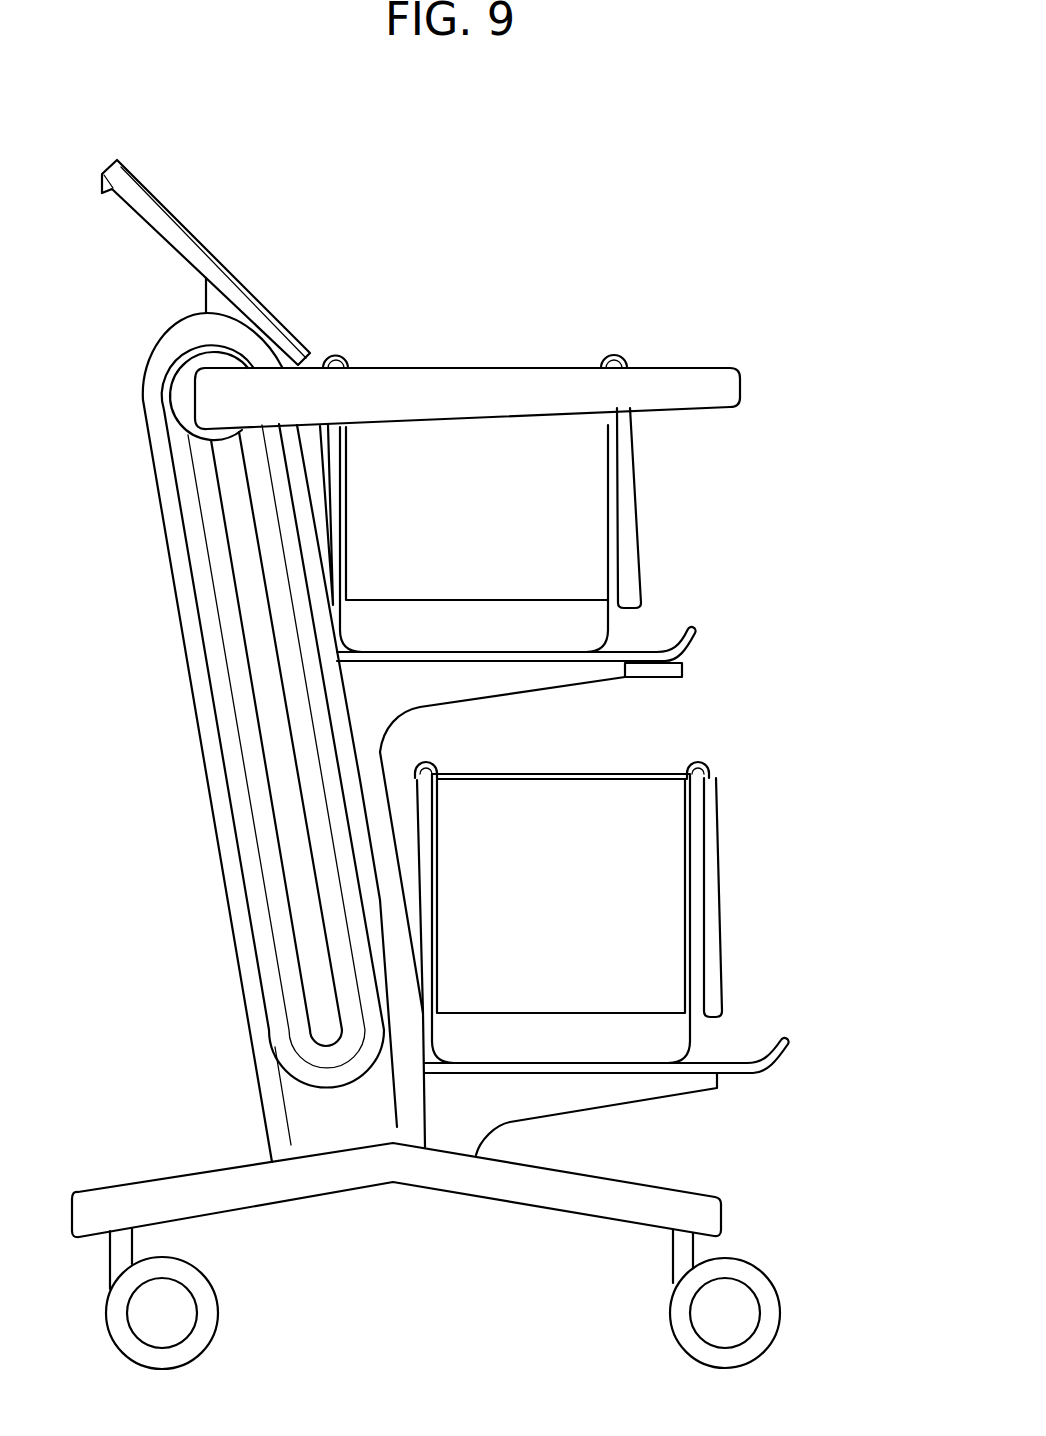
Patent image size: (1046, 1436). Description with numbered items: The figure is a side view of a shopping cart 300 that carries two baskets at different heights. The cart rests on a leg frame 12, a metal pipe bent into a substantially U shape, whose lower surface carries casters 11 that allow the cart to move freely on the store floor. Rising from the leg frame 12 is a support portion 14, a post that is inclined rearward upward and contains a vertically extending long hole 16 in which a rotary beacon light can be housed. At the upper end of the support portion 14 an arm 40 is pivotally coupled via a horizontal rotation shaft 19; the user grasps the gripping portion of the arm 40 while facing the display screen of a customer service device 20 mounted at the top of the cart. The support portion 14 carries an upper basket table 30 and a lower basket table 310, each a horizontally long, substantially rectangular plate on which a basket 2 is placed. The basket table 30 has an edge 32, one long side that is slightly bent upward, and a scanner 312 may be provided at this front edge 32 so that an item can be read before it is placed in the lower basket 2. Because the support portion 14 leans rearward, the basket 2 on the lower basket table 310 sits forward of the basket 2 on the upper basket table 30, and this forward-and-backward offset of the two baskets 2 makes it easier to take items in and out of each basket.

The shopping cart 300 is at (695, 280).
The customer service device 20 is at (118, 157).
The rotation shaft 19 is at (186, 400).
The support portion 14 is at (196, 747).
The long hole 16 is at (258, 650).
The arm 40 is at (523, 380).
The basket 2 is at (577, 505).
The basket table 30 is at (490, 680).
The scanner 312 is at (680, 662).
The edge 32 is at (623, 678).
The basket table 310 is at (582, 1092).
The leg frame 12 is at (562, 1196).
The caster 11 is at (218, 1292).